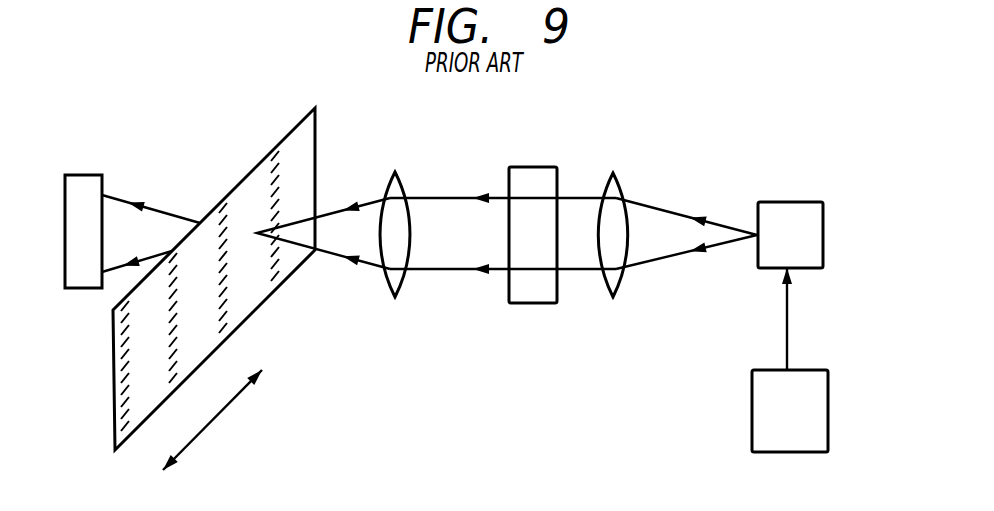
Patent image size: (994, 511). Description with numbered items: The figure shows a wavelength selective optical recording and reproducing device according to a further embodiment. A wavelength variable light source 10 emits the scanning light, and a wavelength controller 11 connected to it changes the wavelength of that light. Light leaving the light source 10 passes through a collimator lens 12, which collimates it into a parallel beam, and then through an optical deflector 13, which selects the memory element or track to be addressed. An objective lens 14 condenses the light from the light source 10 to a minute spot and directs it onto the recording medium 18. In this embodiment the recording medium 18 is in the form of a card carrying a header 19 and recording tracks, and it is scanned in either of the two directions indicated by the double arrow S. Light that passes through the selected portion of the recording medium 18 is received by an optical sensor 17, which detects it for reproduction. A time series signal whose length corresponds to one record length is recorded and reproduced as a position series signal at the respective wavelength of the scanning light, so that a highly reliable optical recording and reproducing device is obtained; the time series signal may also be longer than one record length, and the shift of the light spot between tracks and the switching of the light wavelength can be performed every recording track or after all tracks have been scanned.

The wavelength variable light source 10 is at (823, 222).
The wavelength controller 11 is at (828, 392).
The collimator lens 12 is at (623, 190).
The optical deflector 13 is at (557, 180).
The objective lens 14 is at (400, 187).
The optical sensor 17 is at (102, 183).
The recording medium 18 is at (315, 108).
The header 19 is at (222, 203).
The double arrow S is at (226, 431).